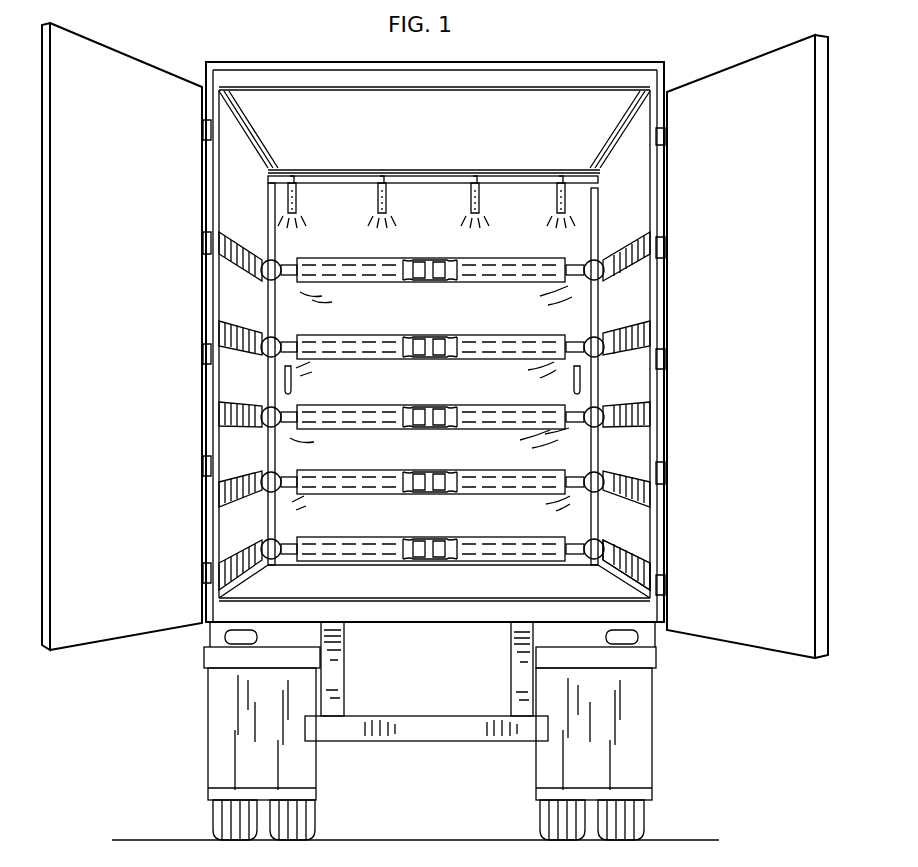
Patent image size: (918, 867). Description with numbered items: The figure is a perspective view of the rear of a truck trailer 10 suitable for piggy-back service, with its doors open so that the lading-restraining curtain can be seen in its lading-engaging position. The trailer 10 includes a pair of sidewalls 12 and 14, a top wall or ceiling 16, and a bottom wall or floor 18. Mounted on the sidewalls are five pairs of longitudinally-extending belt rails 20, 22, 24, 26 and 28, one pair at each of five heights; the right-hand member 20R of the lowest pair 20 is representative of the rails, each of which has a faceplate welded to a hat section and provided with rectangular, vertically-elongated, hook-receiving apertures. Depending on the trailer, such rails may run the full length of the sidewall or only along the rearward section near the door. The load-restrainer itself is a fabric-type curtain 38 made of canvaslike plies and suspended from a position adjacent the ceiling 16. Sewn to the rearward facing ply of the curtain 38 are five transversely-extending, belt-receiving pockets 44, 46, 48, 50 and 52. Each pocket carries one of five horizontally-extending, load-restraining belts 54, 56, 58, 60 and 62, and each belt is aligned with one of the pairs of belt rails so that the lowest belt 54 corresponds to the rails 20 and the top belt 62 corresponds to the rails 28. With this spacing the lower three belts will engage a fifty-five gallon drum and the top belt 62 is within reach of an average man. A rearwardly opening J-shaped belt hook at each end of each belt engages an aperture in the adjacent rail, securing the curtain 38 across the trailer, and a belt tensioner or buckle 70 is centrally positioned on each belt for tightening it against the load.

The truck trailer 10 is at (575, 62).
The sidewall 12 is at (245, 203).
The sidewall 14 is at (630, 203).
The top wall or ceiling 16 is at (504, 141).
The bottom wall or floor 18 is at (533, 601).
The belt rails 20 is at (211, 593).
The right-hand belt rail member 20R is at (655, 602).
The belt rails 22 is at (213, 498).
The belt rails 24 is at (213, 413).
The belt rails 26 is at (213, 333).
The belt rails 28 is at (211, 242).
The fabric-type curtain 38 is at (433, 239).
The belt-receiving pocket 44 is at (365, 537).
The belt-receiving pocket 46 is at (362, 471).
The belt-receiving pocket 48 is at (361, 405).
The belt-receiving pocket 50 is at (362, 336).
The belt-receiving pocket 52 is at (361, 256).
The load-restraining belt 54 is at (568, 539).
The load-restraining belt 56 is at (566, 475).
The load-restraining belt 58 is at (566, 407).
The load-restraining belt 60 is at (570, 336).
The load-restraining belt 62 is at (581, 258).
The belt tensioner or buckle 70 is at (436, 538).